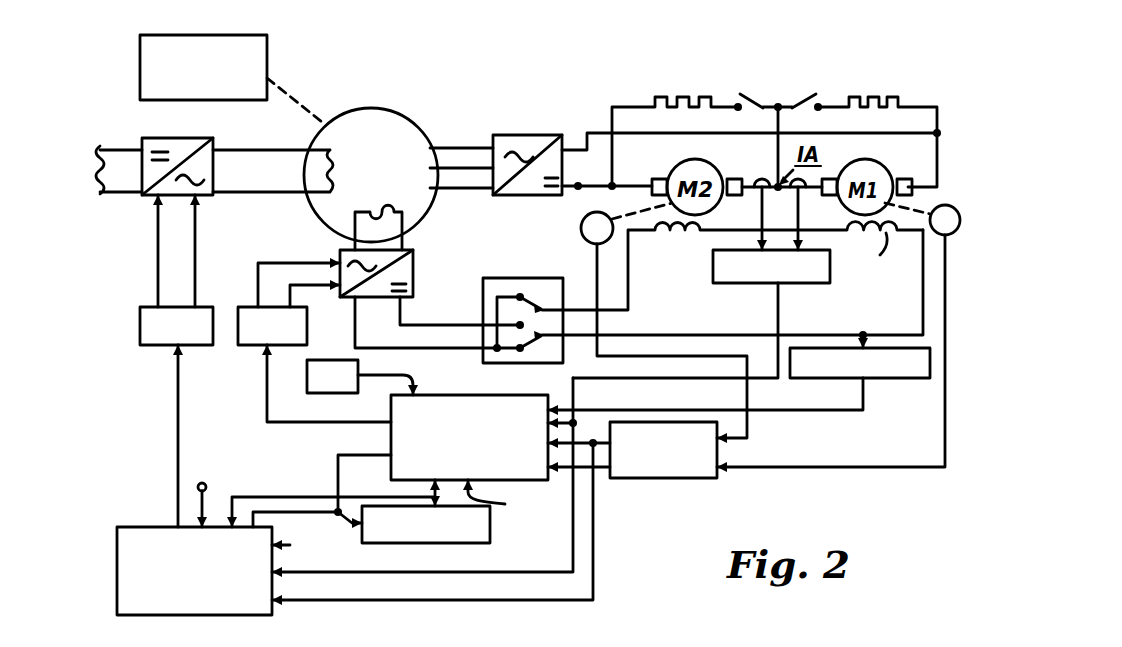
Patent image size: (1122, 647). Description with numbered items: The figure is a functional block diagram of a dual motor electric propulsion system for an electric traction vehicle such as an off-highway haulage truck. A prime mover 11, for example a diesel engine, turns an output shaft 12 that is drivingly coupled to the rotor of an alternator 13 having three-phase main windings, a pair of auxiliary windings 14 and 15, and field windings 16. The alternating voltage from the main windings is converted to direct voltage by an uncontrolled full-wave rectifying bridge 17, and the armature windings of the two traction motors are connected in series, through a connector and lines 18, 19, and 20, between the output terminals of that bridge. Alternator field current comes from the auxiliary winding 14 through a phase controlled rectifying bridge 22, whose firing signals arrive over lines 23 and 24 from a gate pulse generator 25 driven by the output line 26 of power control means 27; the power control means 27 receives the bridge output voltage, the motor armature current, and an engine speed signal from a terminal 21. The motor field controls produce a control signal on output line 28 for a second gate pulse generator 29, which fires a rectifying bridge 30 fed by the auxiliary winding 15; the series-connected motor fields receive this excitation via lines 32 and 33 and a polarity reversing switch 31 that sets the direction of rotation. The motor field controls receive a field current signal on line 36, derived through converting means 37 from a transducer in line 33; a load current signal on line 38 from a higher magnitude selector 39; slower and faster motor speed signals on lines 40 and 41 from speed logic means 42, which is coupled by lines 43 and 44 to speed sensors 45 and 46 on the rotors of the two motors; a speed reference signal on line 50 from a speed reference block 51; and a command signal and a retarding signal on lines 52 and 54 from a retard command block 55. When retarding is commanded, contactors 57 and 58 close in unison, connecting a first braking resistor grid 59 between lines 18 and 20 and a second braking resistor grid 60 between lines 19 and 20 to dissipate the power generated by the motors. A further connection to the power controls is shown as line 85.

The prime mover 11 is at (267, 45).
The output shaft 12 is at (300, 105).
The alternating current electric power generator 13 is at (395, 108).
The auxiliary winding 14 is at (332, 165).
The auxiliary winding 15 is at (384, 215).
The field windings 16 is at (98, 150).
The rectifying bridge 17 is at (525, 135).
The line 18 is at (587, 133).
The line 19 is at (640, 158).
The line 20 is at (818, 218).
The terminal 21 is at (206, 488).
The phase controlled rectifying bridge 22 is at (194, 114).
The line 23 is at (158, 240).
The line 24 is at (195, 240).
The gate pulse generator 25 is at (142, 307).
The output line 26 is at (178, 415).
The power control means 27 is at (148, 527).
The output line 28 is at (267, 380).
The gate pulse generator 29 is at (243, 307).
The phase controlled rectifying bridge 30 is at (413, 258).
The polarity reversing switch 31 is at (530, 278).
The line 32 is at (628, 258).
The line 33 is at (923, 325).
The input line 36 is at (815, 412).
The converting means 37 is at (918, 378).
The input line 38 is at (778, 320).
The higher magnitude selector 39 is at (818, 283).
The input line 40 is at (602, 478).
The input line 41 is at (602, 435).
The speed logic means 42 is at (693, 480).
The line 43 is at (920, 468).
The line 44 is at (597, 323).
The speed sensor 45 is at (950, 205).
The speed sensor 46 is at (580, 232).
The input line 50 is at (431, 366).
The speed reference means 51 is at (310, 393).
The input line 52 is at (400, 497).
The input line 54 is at (469, 459).
The retard command block 55 is at (485, 543).
The contactor 57 is at (810, 95).
The contactor 58 is at (753, 71).
The first braking resistor grid 59 is at (870, 97).
The second braking resistor grid 60 is at (668, 97).
The power control signal line 85 is at (338, 478).